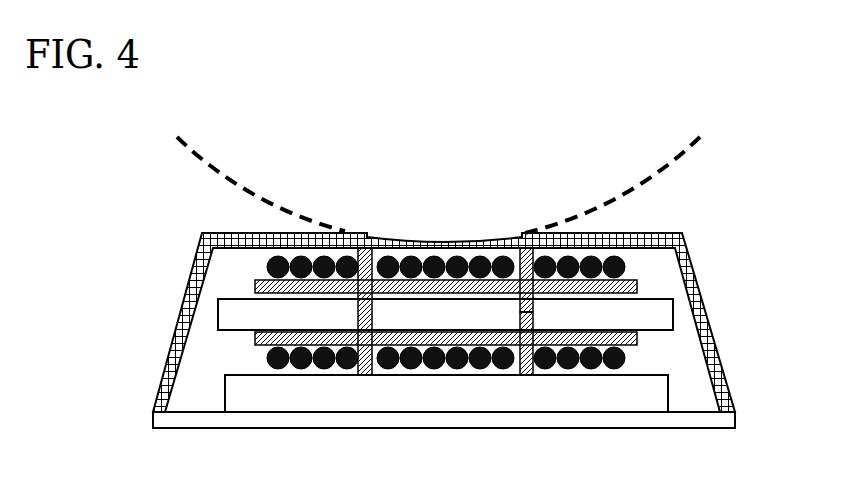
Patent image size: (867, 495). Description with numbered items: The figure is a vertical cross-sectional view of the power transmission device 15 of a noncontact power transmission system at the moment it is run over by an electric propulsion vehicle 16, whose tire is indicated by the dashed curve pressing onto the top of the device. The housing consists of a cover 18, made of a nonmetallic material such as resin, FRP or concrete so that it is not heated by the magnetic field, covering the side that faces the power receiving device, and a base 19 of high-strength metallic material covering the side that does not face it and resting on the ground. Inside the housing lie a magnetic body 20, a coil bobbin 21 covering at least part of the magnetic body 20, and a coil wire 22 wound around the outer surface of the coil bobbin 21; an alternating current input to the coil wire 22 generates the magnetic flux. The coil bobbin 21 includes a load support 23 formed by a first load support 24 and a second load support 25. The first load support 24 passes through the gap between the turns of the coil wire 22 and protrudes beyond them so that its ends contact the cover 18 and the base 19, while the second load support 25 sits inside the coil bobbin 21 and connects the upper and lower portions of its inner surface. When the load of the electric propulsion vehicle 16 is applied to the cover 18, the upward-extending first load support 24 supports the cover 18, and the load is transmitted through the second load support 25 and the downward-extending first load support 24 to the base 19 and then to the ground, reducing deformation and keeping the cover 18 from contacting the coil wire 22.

The power transmission device 15 is at (451, 308).
The electric propulsion vehicle 16 is at (653, 162).
The cover 18 is at (198, 247).
The base 19 is at (292, 397).
The magnetic body 20 is at (240, 315).
The coil bobbin 21 is at (287, 263).
The coil wire 22 is at (303, 287).
The load support 23 is at (486, 256).
The first load support 24 is at (528, 278).
The second load support 25 is at (530, 305).